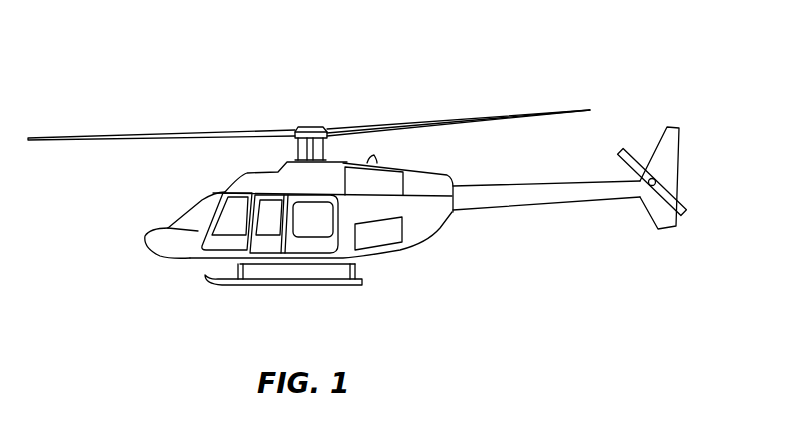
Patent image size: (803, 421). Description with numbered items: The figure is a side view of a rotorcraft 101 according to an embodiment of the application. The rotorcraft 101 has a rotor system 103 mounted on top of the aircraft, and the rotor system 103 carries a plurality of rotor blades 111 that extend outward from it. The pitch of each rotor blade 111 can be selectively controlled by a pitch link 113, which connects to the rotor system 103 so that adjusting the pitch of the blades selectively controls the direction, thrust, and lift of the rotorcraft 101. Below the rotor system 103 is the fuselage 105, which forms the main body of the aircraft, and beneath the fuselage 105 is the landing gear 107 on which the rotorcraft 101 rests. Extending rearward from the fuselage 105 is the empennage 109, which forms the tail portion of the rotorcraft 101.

The rotorcraft 101 is at (146, 86).
The rotor system 103 is at (318, 110).
The fuselage 105 is at (190, 259).
The landing gear 107 is at (320, 284).
The empennage 109 is at (525, 207).
The rotor blade 111 is at (538, 113).
The pitch link 113 is at (333, 136).